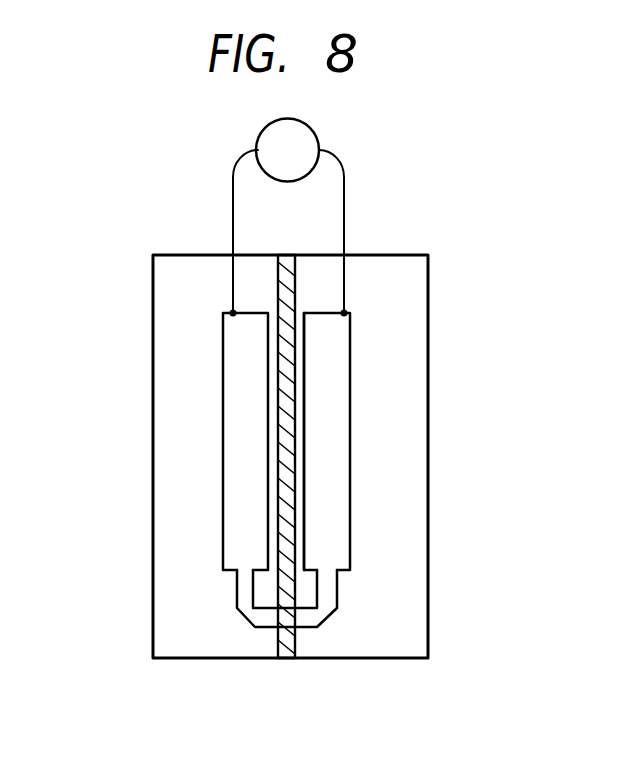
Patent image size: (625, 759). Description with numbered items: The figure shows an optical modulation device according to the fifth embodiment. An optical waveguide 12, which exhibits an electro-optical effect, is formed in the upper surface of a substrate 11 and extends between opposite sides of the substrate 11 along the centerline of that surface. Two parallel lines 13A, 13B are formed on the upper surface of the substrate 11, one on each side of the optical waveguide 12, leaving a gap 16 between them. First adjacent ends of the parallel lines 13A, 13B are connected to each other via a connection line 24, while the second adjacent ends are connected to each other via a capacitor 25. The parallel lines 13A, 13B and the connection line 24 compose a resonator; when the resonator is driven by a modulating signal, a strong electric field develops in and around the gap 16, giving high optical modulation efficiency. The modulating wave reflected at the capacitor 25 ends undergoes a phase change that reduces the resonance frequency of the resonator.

The substrate 11 is at (402, 617).
The optical waveguide 12 is at (283, 400).
The parallel line 13A is at (235, 445).
The parallel line 13B is at (328, 468).
The gap 16 is at (302, 368).
The connection line 24 is at (257, 617).
The capacitor 25 is at (302, 145).